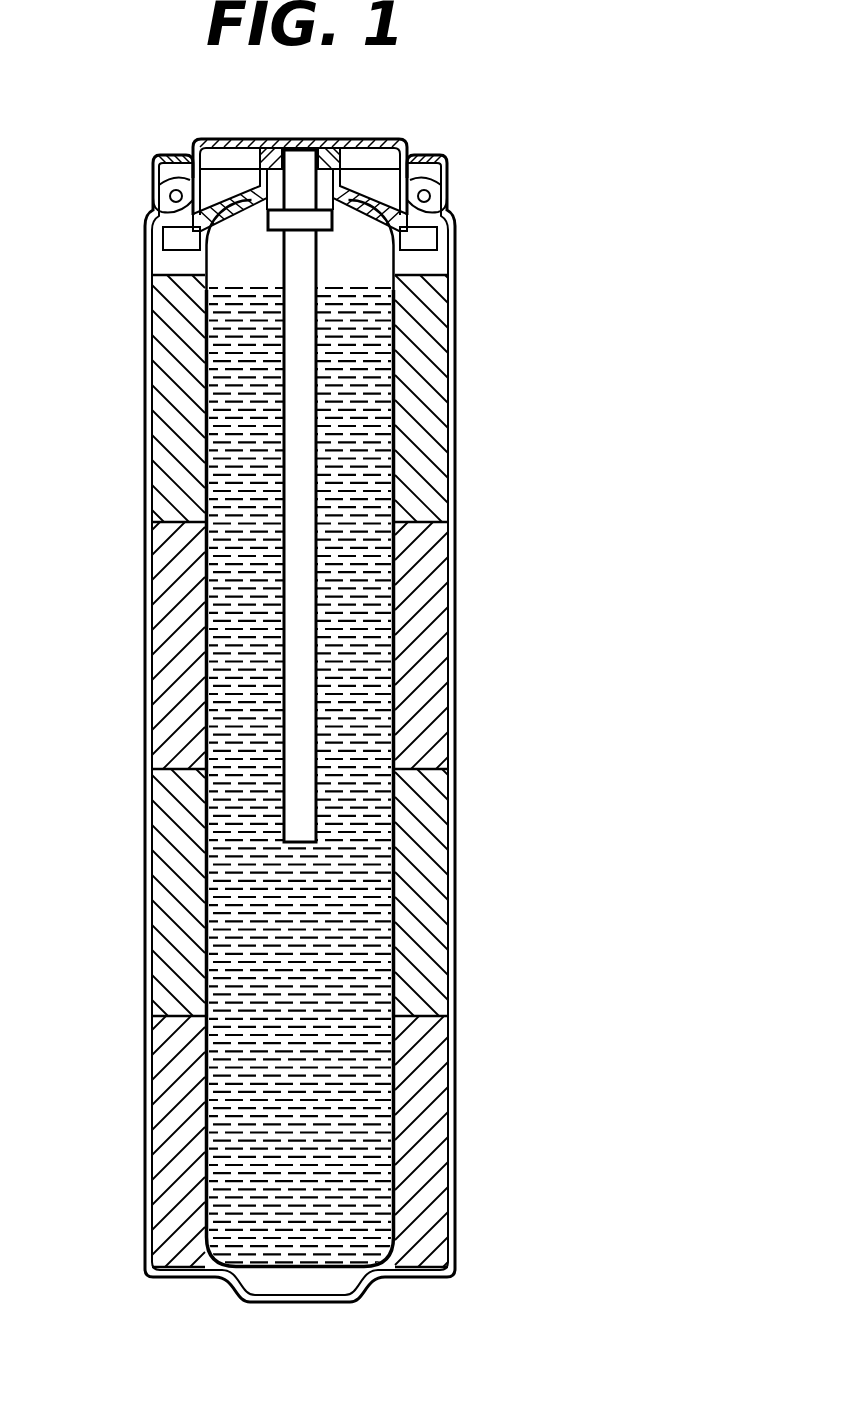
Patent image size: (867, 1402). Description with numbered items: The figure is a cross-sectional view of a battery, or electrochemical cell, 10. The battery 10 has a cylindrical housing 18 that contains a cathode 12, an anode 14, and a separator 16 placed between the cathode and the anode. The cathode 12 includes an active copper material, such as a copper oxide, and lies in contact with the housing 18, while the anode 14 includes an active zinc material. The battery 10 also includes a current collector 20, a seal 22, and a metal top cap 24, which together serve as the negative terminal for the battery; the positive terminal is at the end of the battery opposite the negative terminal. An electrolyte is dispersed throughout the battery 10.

The battery 10 is at (574, 234).
The cathode 12 is at (437, 372).
The anode 14 is at (360, 869).
The separator 16 is at (205, 693).
The cylindrical housing 18 is at (146, 483).
The current collector 20 is at (302, 645).
The seal 22 is at (190, 231).
The metal top cap 24 is at (404, 138).